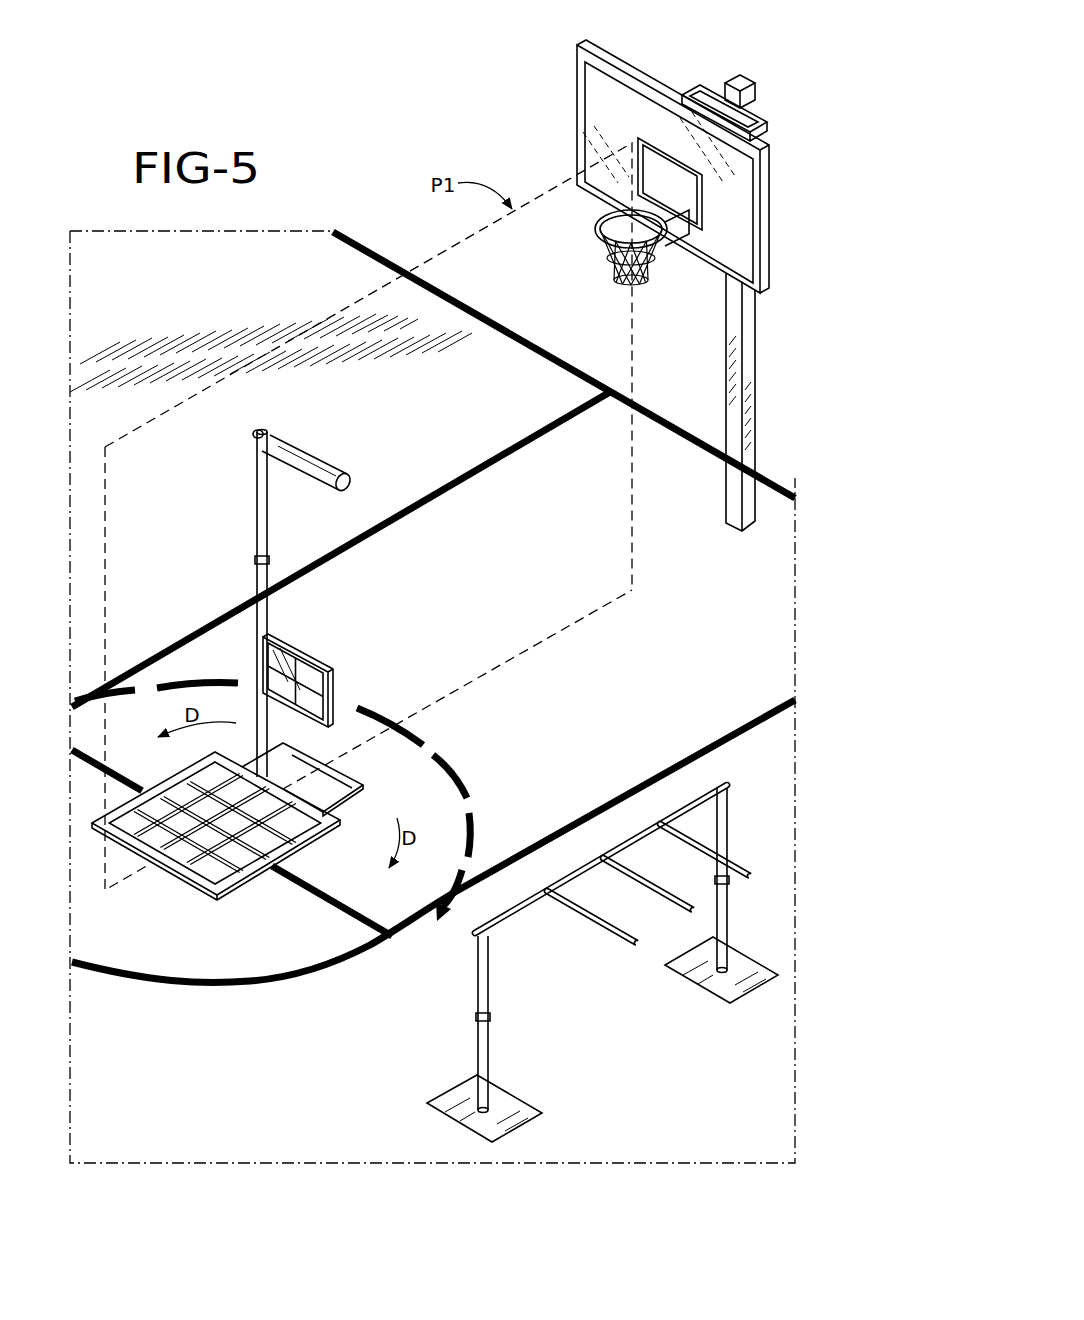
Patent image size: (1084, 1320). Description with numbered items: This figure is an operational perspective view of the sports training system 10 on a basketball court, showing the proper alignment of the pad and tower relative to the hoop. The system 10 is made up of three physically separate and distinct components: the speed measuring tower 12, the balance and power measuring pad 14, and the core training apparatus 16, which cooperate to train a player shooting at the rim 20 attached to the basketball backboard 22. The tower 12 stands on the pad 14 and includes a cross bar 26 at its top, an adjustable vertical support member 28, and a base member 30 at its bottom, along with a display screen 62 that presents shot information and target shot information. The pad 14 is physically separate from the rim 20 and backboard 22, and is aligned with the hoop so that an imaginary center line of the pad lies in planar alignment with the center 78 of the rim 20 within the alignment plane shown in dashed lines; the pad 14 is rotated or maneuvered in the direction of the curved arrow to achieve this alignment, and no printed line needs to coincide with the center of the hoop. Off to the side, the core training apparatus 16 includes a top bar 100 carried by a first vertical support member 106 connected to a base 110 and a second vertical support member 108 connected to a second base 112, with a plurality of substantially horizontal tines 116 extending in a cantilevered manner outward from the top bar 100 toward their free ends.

The sports training system 10 is at (456, 715).
The speed measuring tower 12 is at (250, 536).
The balance and power measuring pad 14 is at (171, 891).
The core training apparatus 16 is at (471, 1005).
The rim 20 is at (594, 229).
The basketball backboard 22 is at (572, 106).
The cross bar 26 is at (321, 444).
The adjustable vertical support member 28 is at (255, 497).
The base member 30 is at (349, 771).
The display screen 62 is at (308, 647).
The center of the rim 78 is at (612, 258).
The top bar 100 is at (528, 914).
The first vertical support member 106 is at (731, 835).
The second vertical support member 108 is at (492, 1040).
The base 110 is at (724, 989).
The second base 112 is at (460, 1091).
The tines 116 is at (612, 941).